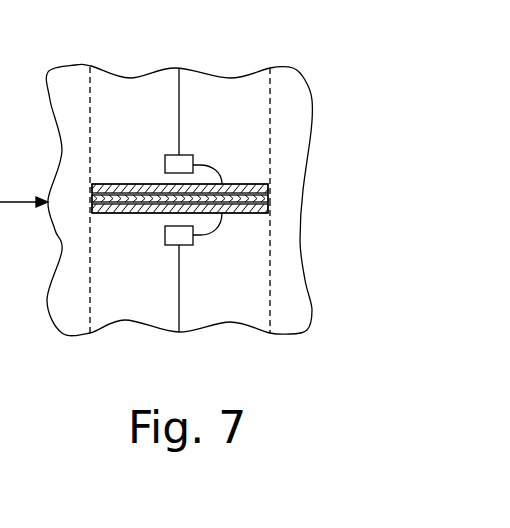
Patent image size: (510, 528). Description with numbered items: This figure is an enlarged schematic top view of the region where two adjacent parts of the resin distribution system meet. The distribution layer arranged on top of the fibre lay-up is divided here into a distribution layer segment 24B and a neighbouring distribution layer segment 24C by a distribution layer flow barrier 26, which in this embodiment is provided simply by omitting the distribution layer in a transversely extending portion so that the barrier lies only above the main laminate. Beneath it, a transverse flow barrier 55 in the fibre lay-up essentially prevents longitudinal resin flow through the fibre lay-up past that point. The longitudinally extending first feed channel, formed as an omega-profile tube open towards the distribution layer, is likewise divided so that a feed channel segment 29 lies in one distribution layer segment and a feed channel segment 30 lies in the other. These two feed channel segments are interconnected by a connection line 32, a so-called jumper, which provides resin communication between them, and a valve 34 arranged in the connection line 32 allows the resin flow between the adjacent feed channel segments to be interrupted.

The distribution layer segment 24B is at (270, 288).
The distribution layer segment 24C is at (262, 113).
The distribution layer flow barrier 26 is at (270, 190).
The feed channel segment 29 is at (180, 302).
The feed channel segment 30 is at (184, 90).
The connection line 32 is at (224, 184).
The valve 34 is at (268, 206).
The transverse flow barrier 55 is at (270, 200).